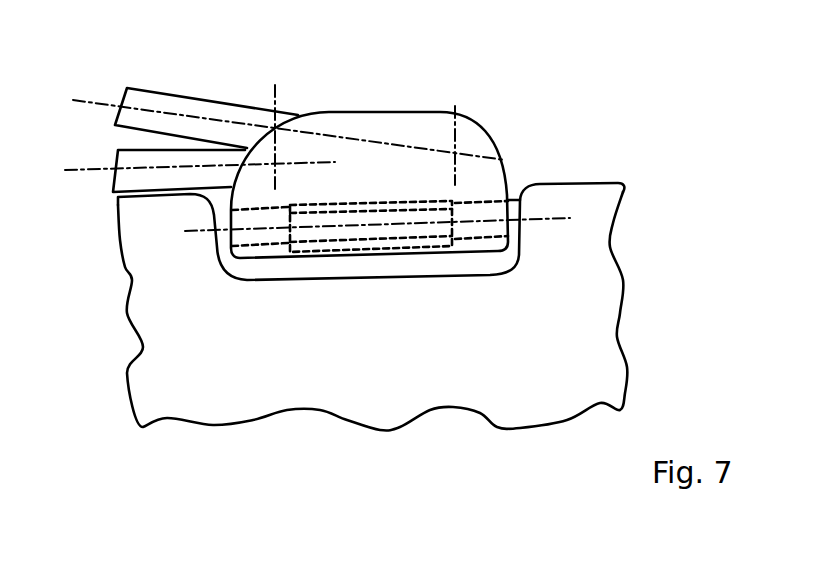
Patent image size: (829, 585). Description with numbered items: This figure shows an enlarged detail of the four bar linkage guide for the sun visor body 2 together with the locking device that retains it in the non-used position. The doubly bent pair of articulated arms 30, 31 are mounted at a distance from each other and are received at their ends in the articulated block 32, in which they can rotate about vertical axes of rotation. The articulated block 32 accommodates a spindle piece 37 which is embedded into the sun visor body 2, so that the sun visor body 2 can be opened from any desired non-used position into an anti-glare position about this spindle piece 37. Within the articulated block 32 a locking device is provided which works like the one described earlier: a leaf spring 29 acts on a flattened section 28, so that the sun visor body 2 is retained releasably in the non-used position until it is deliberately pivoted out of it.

The sun visor body 2 is at (583, 287).
The flattened section 28 is at (357, 217).
The leaf spring 29 is at (443, 247).
The articulated arm 30 is at (203, 110).
The articulated arm 31 is at (127, 176).
The articulated block 32 is at (417, 132).
The spindle piece 37 is at (515, 200).